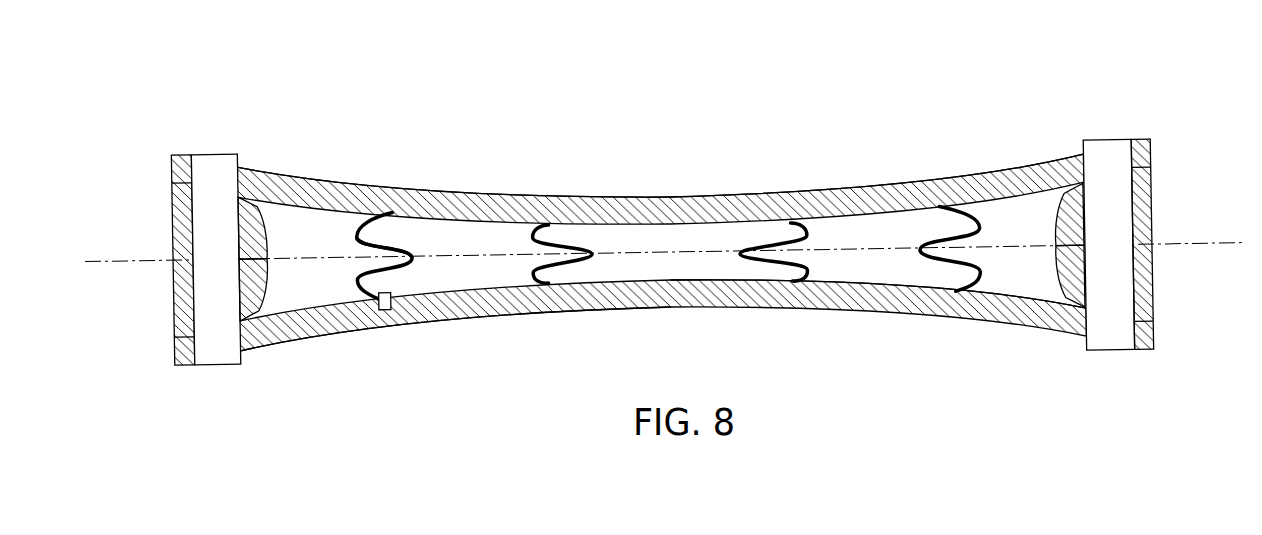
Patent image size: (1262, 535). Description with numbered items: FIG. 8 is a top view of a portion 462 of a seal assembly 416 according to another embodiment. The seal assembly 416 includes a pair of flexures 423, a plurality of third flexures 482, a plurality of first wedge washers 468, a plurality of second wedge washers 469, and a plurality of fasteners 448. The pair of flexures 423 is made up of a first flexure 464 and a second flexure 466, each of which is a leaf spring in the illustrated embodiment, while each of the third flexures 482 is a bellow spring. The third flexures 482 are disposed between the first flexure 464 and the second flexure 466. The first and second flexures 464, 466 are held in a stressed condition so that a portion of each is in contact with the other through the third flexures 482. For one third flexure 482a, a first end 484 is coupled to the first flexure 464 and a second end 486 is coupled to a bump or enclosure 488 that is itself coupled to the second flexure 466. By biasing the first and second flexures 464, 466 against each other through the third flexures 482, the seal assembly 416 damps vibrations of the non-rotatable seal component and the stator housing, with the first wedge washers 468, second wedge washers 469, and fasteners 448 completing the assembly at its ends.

The seal assembly 416 is at (1103, 66).
The portion 462 is at (265, 159).
The first flexure 464 is at (406, 187).
The pair of flexures 423 is at (904, 278).
The second flexure 466 is at (333, 340).
The bump or enclosure 488 is at (411, 322).
The fasteners 448 is at (220, 365).
The first wedge washers 468 is at (268, 218).
The second wedge washers 469 is at (270, 280).
The first end 484 is at (393, 210).
The one third flexure 482a is at (390, 236).
The second end 486 is at (391, 290).
The third flexures 482 is at (765, 240).